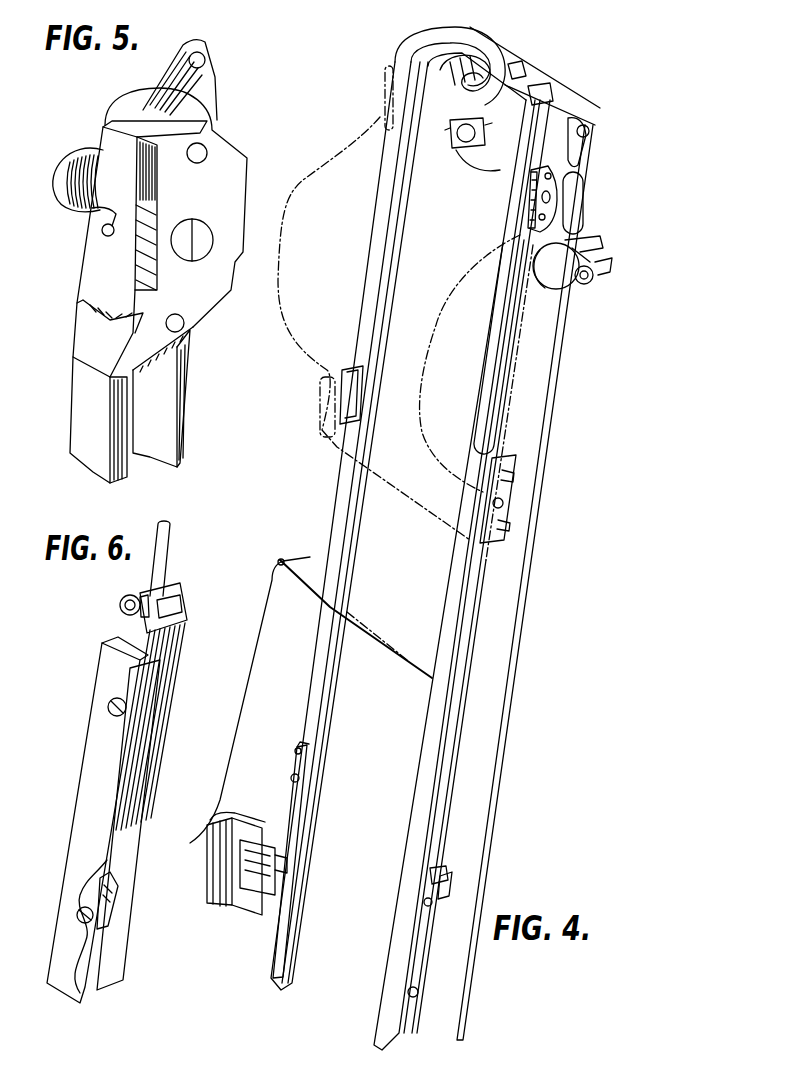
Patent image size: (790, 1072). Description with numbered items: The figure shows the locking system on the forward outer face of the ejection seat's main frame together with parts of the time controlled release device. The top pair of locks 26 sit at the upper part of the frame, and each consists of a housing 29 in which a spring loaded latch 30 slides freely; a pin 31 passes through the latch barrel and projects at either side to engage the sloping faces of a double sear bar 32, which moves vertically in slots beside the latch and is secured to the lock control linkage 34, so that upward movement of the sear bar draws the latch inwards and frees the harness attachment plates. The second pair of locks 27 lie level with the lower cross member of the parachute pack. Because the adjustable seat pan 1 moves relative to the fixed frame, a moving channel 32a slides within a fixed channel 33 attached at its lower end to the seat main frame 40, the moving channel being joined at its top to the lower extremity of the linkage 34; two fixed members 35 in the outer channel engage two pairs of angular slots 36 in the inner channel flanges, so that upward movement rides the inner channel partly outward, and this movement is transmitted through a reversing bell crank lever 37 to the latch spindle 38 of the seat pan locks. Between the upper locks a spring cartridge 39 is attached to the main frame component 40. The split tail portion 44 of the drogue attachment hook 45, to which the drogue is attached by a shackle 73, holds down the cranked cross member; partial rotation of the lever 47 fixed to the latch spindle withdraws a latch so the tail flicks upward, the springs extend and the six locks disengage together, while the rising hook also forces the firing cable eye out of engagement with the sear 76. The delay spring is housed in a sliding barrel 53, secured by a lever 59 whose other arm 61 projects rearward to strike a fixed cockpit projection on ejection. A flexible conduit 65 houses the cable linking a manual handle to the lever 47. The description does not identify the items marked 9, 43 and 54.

In FIG. 4, the adjustable seat pan 1 is at (237, 757).
In FIG. 4, the frame member 9 is at (520, 342).
In FIG. 5, the top pair of locks 26 is at (240, 173).
In FIG. 4, the top pair of locks 26 is at (548, 183).
In FIG. 4, the second pair of locks 27 is at (353, 403).
In FIG. 5, the housing 29 is at (60, 178).
In FIG. 5, the spring loaded latch 30 is at (202, 240).
In FIG. 5, the pin 31 is at (102, 232).
In FIG. 5, the double sear bar 32 is at (100, 273).
In FIG. 4, the double sear bar 32 is at (447, 882).
In FIG. 6, the moving channel 32a is at (160, 737).
In FIG. 6, the fixed channel 33 is at (80, 775).
In FIG. 4, the fixed channel 33 is at (283, 785).
In FIG. 6, the lock control linkage 34 is at (173, 541).
In FIG. 4, the lock control linkage 34 is at (495, 450).
In FIG. 6, the fixed members 35 is at (108, 705).
In FIG. 4, the fixed members 35 is at (424, 904).
In FIG. 6, the angular slots 36 is at (140, 673).
In FIG. 4, the reversing bell crank lever 37 is at (262, 905).
In FIG. 4, the latch spindle 38 is at (235, 905).
In FIG. 4, the spring cartridge 39 is at (513, 377).
In FIG. 4, the main frame component 40 is at (343, 517).
In FIG. 4, the bracket 43 is at (537, 103).
In FIG. 4, the split tail portion 44 is at (530, 78).
In FIG. 4, the drogue attachment hook 45 is at (443, 73).
In FIG. 4, the lever 47 is at (577, 153).
In FIG. 4, the sliding barrel 53 is at (577, 193).
In FIG. 4, the drum 54 is at (570, 288).
In FIG. 4, the lever 59 is at (590, 252).
In FIG. 4, the other arm 61 is at (608, 266).
In FIG. 4, the flexible conduit 65 is at (500, 785).
In FIG. 4, the shackle 73 is at (447, 117).
In FIG. 4, the sear 76 is at (520, 67).